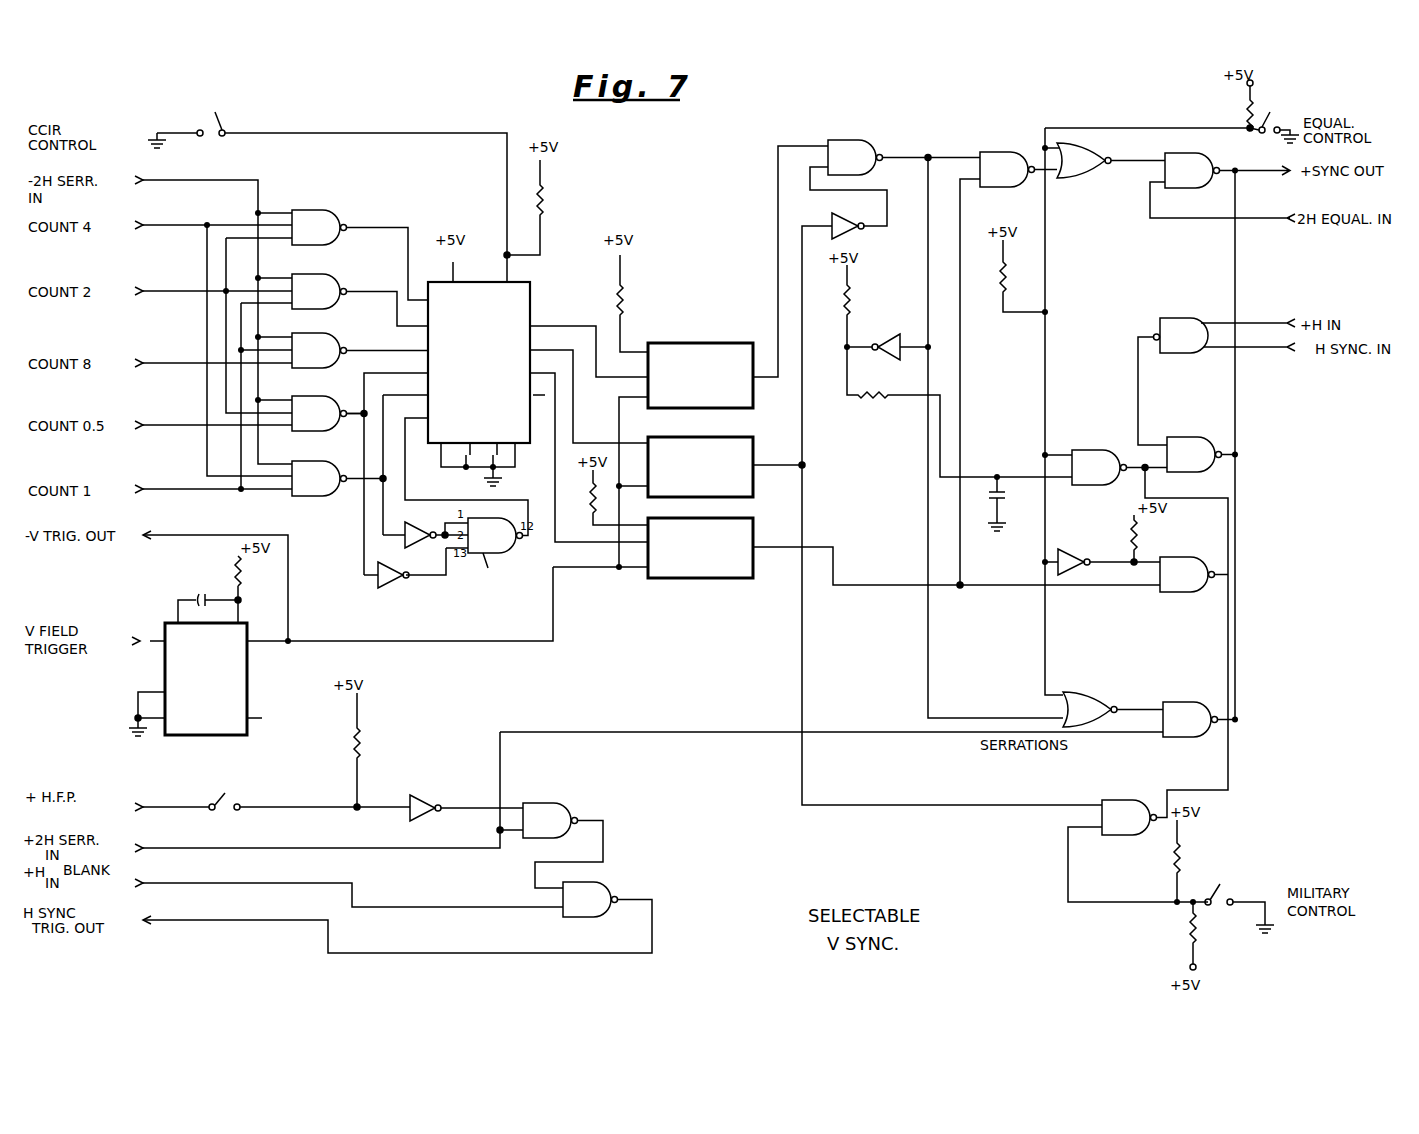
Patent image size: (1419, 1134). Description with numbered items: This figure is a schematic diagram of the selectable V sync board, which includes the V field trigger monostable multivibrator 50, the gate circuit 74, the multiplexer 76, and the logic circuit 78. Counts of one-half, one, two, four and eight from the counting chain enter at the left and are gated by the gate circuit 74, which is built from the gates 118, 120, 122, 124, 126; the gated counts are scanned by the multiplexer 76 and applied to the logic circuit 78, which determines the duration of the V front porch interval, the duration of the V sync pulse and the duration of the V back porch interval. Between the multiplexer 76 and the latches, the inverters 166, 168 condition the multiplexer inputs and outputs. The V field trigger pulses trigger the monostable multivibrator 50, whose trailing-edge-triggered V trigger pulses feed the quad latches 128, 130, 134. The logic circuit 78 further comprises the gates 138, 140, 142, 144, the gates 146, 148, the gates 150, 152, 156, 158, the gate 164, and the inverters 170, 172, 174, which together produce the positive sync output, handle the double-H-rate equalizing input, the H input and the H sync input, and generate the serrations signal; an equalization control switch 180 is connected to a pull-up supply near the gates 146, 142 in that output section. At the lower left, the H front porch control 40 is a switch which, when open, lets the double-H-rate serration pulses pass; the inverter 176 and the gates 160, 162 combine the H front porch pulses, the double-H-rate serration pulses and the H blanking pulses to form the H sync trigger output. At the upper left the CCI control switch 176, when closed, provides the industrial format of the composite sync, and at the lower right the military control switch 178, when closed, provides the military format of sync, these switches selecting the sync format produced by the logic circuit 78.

The CCI control switch 176 is at (218, 120).
The gate 118 is at (313, 208).
The gate 120 is at (312, 274).
The gate 122 is at (334, 337).
The gate 124 is at (324, 404).
The gate 126 is at (326, 467).
The gate circuit 74 is at (411, 184).
The multiplexer 76 is at (488, 335).
The inverter 168 is at (405, 522).
The inverter 166 is at (383, 590).
The V field trigger monostable multivibrator 50 is at (213, 716).
The H front porch control 40 is at (224, 797).
The gate 160 is at (535, 802).
The gate 162 is at (583, 918).
The quad latch 128 is at (697, 341).
The quad latch 130 is at (700, 436).
The quad latch 134 is at (700, 517).
The gate 138 is at (848, 140).
The gate 140 is at (990, 152).
The inverter 170 is at (832, 215).
The inverter 172 is at (887, 331).
The gate 146 is at (1080, 179).
The gate 142 is at (1187, 189).
The equalization control switch 180 is at (1275, 113).
The gate 144 is at (1178, 318).
The logic circuit 78 is at (1091, 306).
The gate 164 is at (1080, 449).
The gate 150 is at (1178, 436).
The inverter 174 is at (1060, 548).
The gate 152 is at (1168, 556).
The gate 148 is at (1075, 691).
The gate 156 is at (1180, 702).
The gate 158 is at (1113, 800).
The military control switch 178 is at (1215, 885).